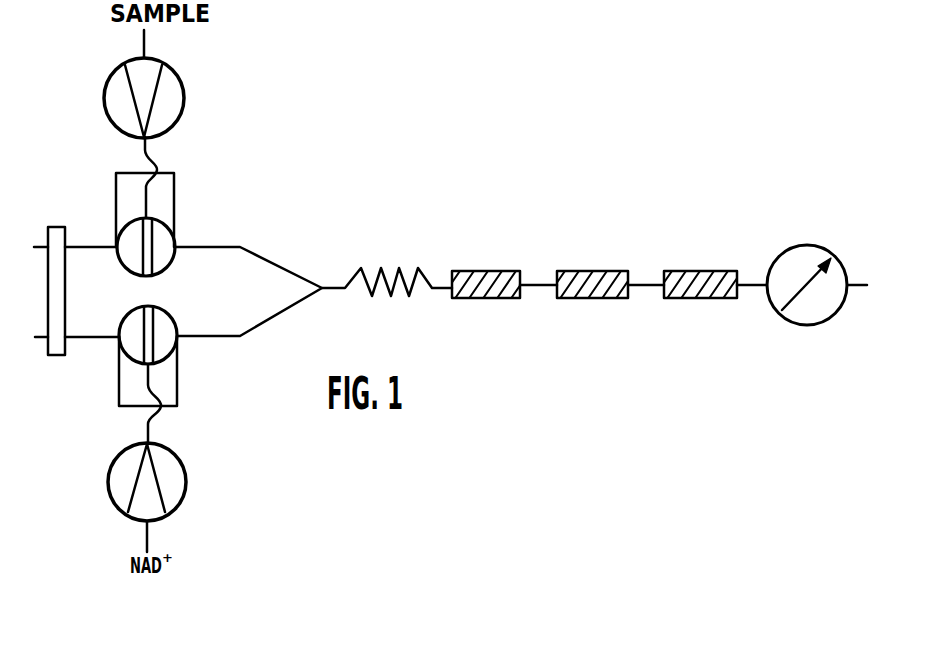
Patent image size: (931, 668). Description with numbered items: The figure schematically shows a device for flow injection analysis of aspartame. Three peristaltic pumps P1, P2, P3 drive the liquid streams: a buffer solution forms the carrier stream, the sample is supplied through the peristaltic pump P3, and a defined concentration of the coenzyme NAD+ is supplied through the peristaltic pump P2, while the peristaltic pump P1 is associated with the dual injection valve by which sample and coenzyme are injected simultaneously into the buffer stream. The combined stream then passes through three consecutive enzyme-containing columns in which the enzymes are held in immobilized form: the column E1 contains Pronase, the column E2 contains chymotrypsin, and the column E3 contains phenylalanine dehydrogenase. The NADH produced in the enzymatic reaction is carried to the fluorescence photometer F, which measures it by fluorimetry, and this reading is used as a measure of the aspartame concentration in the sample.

The peristaltic pump P1 is at (56, 340).
The peristaltic pump P2 is at (176, 484).
The peristaltic pump P3 is at (170, 99).
The enzyme-containing column E1 is at (471, 283).
The enzyme-containing column E2 is at (583, 283).
The enzyme-containing column E3 is at (688, 283).
The fluorescence photometer F is at (795, 308).